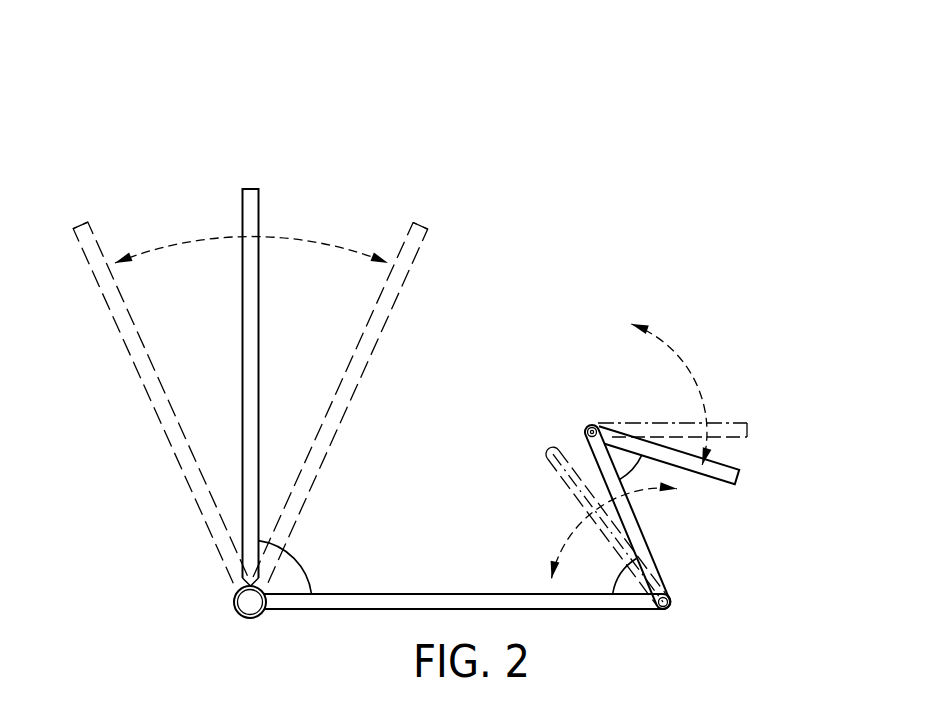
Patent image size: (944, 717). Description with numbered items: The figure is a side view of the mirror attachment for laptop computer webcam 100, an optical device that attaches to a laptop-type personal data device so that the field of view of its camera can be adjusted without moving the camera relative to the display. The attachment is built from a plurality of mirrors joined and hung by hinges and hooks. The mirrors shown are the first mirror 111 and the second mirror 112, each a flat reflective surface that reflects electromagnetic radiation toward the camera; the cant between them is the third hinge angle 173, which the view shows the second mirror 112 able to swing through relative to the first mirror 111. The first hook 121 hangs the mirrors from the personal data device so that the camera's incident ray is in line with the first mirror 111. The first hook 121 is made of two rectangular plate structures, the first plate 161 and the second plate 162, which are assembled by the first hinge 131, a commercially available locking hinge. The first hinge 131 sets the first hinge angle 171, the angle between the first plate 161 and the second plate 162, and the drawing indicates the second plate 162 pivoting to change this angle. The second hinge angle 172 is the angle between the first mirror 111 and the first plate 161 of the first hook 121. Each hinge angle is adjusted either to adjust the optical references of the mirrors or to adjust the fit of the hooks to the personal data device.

The mirror attachment for laptop computer webcam 100 is at (185, 97).
The first mirror 111 is at (343, 609).
The second mirror 112 is at (243, 371).
The first hook 121 is at (723, 419).
The first hinge 131 is at (592, 426).
The first plate 161 is at (586, 458).
The second plate 162 is at (741, 468).
The first hinge angle 171 is at (638, 463).
The second hinge angle 172 is at (610, 584).
The third hinge angle 173 is at (299, 552).